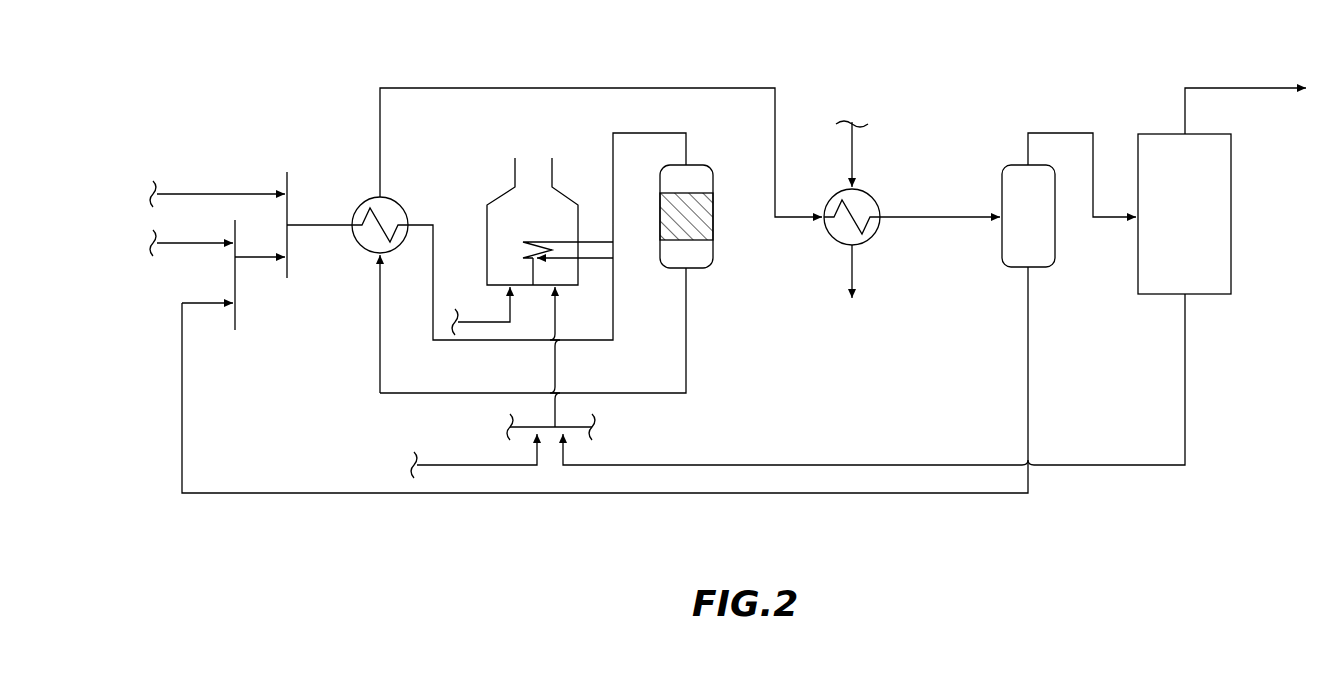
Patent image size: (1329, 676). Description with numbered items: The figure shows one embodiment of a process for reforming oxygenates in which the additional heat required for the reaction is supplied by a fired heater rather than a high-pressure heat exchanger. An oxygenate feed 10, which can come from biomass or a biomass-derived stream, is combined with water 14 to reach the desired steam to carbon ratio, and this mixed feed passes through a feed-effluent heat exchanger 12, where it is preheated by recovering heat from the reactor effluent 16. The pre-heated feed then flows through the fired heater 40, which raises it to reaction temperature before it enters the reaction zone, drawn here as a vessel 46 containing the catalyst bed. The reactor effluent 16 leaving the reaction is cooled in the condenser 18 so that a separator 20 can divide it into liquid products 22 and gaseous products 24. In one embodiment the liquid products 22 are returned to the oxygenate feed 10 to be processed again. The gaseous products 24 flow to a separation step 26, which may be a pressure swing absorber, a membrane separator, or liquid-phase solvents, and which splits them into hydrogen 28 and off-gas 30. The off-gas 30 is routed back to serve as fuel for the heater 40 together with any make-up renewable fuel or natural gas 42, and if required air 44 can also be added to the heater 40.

The oxygenate feed 10 is at (233, 277).
The feed-effluent heat exchanger 12 is at (368, 195).
The water 14 is at (245, 192).
The reactor effluent 16 is at (533, 88).
The condenser 18 is at (873, 198).
The separator 20 is at (1028, 216).
The liquid products 22 is at (613, 495).
The gaseous products 24 is at (1053, 132).
The separation step 26 is at (1184, 214).
The hydrogen 28 is at (1210, 87).
The off-gas 30 is at (902, 463).
The fired heater 40 is at (513, 170).
The make-up renewable fuel or natural gas 42 is at (450, 463).
The air 44 is at (487, 310).
The catalyst bed vessel 46 is at (715, 170).